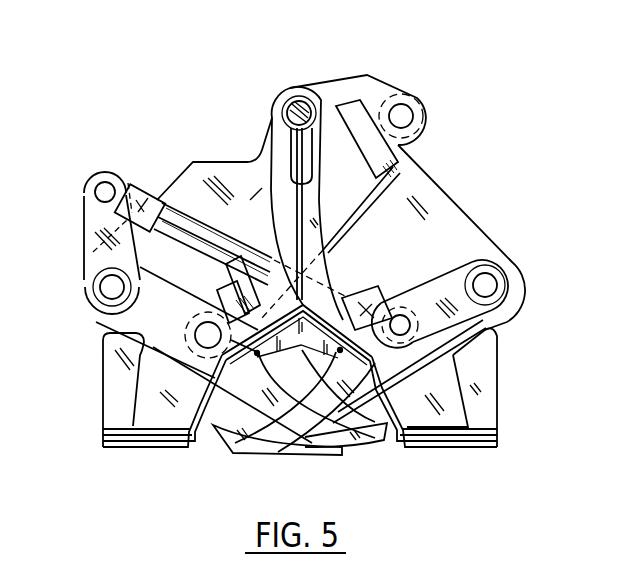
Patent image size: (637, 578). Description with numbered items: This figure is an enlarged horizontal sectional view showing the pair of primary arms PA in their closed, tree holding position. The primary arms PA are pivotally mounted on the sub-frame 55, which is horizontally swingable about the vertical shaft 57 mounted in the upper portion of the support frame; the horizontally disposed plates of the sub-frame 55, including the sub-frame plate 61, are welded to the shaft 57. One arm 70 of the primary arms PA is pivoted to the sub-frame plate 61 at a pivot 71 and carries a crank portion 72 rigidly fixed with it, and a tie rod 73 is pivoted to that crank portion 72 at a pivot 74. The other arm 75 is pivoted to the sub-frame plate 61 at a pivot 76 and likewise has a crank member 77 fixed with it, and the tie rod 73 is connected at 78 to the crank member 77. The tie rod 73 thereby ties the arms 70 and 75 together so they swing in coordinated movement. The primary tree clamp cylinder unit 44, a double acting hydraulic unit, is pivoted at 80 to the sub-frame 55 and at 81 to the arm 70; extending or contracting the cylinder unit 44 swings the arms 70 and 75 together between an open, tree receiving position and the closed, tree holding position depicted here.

The primary tree clamp cylinder unit 44 is at (353, 200).
The sub-frame 55 is at (222, 161).
The vertical shaft 57 is at (296, 102).
The sub-frame plate 61 is at (457, 206).
The arm 70 is at (368, 442).
The pivot 71 is at (107, 287).
The crank portion 72 is at (85, 220).
The tie rod 73 is at (175, 214).
The pivot 74 is at (105, 183).
The arm 75 is at (245, 452).
The pivot 76 is at (491, 285).
The crank member 77 is at (427, 293).
The pivot connection 78 is at (397, 320).
The pivot 80 is at (405, 113).
The pivot 81 is at (207, 330).
The primary arms PA is at (330, 457).